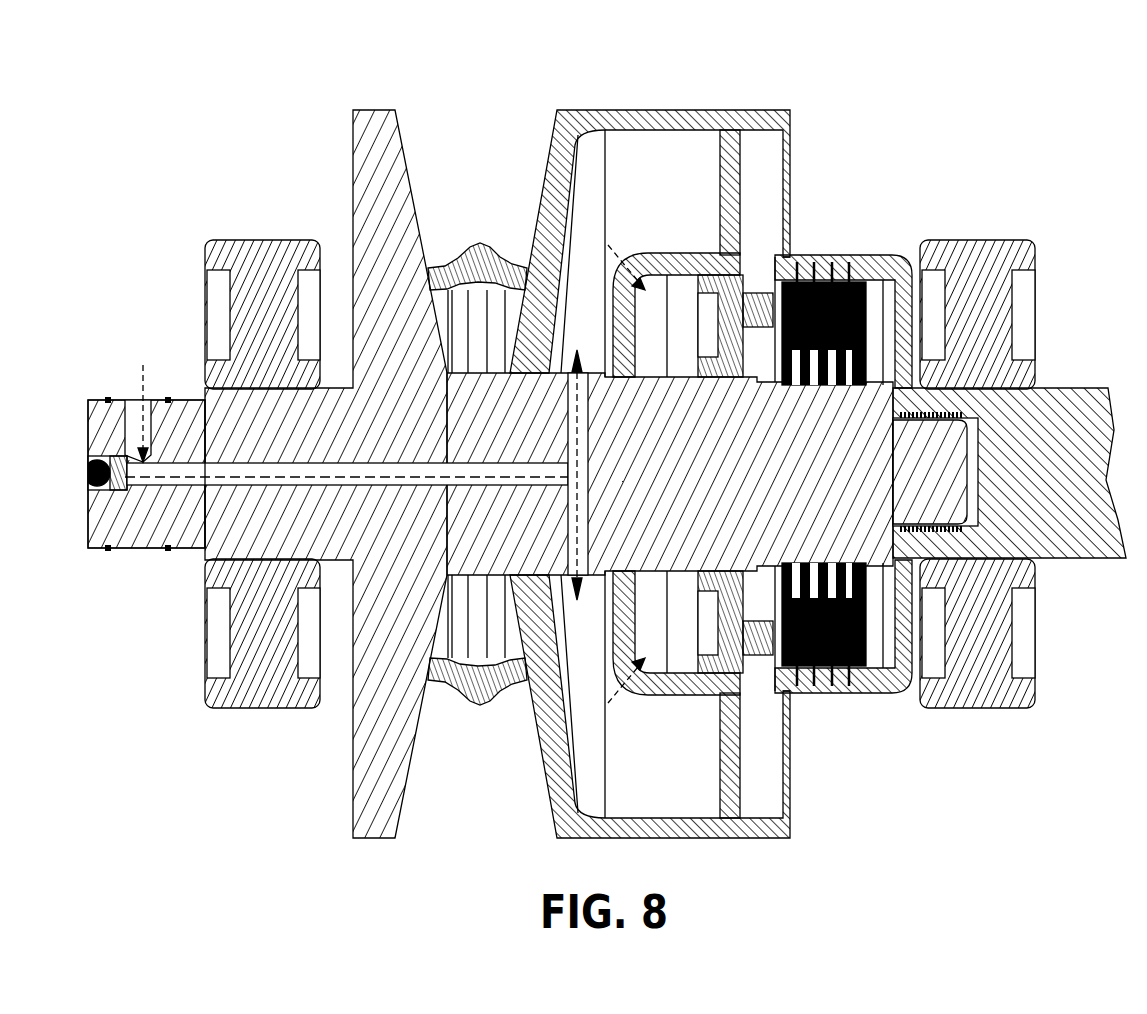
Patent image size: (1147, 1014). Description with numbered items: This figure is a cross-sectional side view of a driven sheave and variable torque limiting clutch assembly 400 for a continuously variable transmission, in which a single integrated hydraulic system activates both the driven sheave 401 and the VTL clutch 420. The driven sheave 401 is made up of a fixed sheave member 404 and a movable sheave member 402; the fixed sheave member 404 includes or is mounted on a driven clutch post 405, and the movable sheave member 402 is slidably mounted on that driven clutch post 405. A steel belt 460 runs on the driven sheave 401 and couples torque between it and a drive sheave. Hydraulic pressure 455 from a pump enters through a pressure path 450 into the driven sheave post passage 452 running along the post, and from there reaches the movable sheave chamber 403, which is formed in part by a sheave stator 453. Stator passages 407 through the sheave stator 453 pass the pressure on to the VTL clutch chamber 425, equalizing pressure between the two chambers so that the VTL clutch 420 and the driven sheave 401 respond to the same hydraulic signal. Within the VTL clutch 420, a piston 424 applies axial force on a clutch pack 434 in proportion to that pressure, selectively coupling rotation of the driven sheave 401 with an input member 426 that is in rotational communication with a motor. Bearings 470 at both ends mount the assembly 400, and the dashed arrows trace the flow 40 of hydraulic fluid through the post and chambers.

The driven sheave and variable torque limiting clutch assembly 400 is at (178, 118).
The driven sheave 401 is at (710, 63).
The movable sheave member 402 is at (580, 116).
The movable sheave chamber 403 is at (668, 155).
The fixed sheave member 404 is at (402, 142).
The driven clutch post 405 is at (385, 540).
The stator passages 407 is at (642, 262).
The fluid passage 40 is at (545, 393).
The VTL clutch 420 is at (690, 748).
The piston 424 is at (742, 300).
The VTL clutch chamber 425 is at (650, 308).
The input member 426 is at (1055, 543).
The clutch pack 434 is at (853, 698).
The pressure path 450 is at (133, 423).
The driven sheave post passage 452 is at (210, 482).
The sheave stator 453 is at (737, 165).
The pressure 455 is at (147, 392).
The steel belt 460 is at (478, 252).
The bearings 470 is at (965, 252).